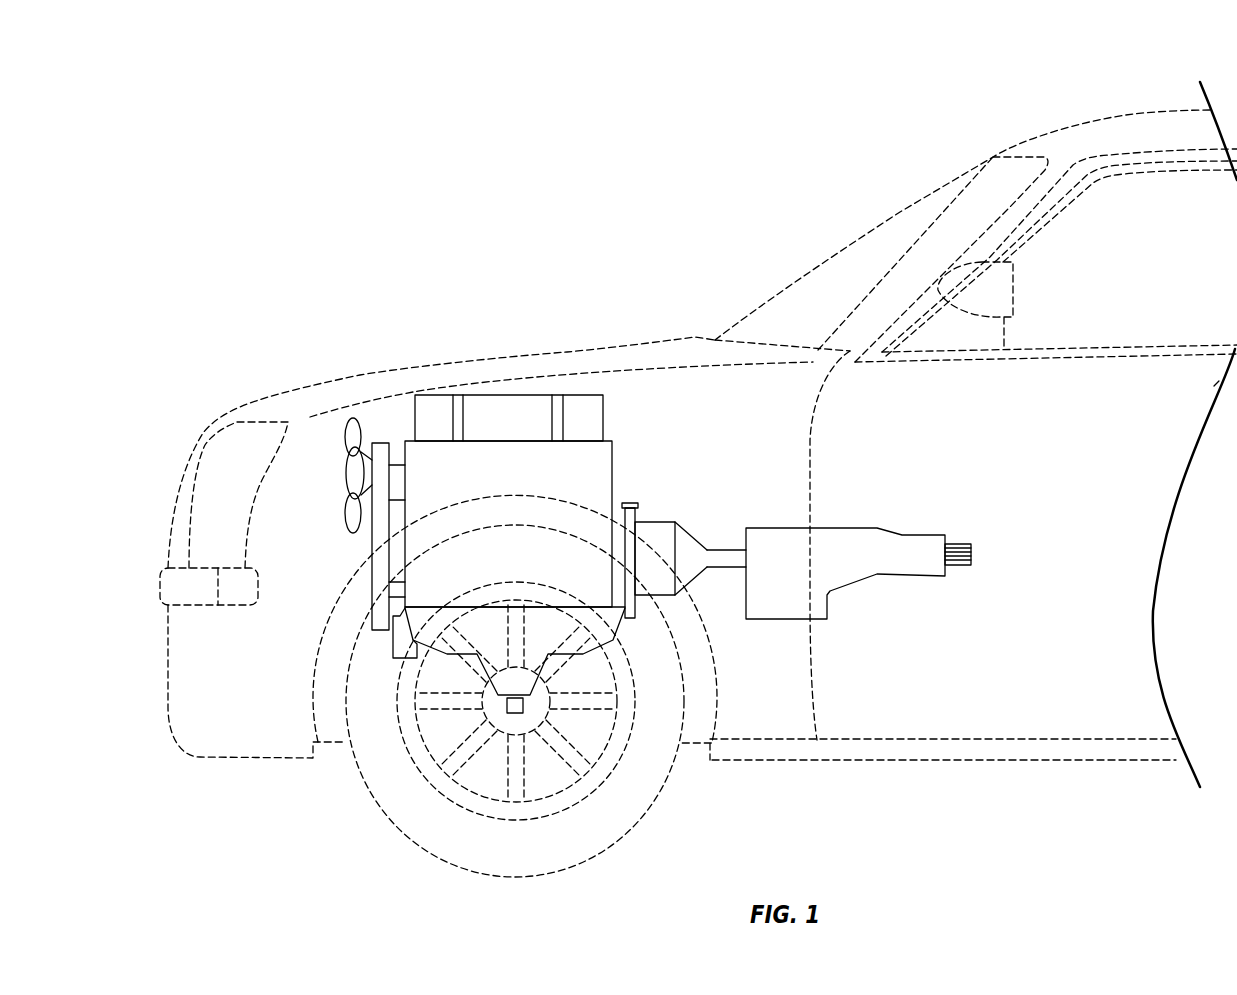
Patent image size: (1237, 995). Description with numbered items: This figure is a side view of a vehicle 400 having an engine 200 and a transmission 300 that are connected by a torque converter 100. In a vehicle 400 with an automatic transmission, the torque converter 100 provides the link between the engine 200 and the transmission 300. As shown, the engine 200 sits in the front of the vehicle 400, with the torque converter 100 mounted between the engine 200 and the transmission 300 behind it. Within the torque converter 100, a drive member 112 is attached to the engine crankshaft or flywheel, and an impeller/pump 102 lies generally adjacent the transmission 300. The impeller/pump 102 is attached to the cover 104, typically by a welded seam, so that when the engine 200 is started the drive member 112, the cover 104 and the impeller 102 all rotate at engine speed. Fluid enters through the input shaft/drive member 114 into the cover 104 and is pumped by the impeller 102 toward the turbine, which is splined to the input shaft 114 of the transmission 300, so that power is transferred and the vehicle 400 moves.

The vehicle 400 is at (626, 300).
The engine 200 is at (527, 477).
The torque converter 100 is at (705, 583).
The drive member 112 is at (637, 572).
The cover 104 is at (670, 583).
The impeller/pump 102 is at (693, 577).
The input shaft/drive member 114 is at (718, 551).
The transmission 300 is at (795, 569).